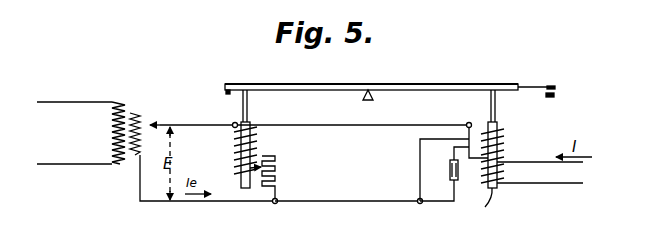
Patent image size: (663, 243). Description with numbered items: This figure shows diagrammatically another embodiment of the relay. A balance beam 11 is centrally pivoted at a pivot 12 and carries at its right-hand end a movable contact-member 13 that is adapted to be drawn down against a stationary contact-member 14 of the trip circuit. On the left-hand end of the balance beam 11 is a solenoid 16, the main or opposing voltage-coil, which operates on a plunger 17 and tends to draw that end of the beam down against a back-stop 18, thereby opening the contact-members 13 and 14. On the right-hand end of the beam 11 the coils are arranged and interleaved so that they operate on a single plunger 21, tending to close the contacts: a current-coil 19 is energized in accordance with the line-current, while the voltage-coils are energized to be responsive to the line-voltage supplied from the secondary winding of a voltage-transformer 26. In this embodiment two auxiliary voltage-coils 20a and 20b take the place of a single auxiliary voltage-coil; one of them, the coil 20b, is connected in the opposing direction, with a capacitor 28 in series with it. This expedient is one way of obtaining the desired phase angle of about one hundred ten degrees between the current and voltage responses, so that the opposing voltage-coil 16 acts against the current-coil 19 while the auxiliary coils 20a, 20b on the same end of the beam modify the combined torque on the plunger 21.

The balance beam 11 is at (338, 84).
The pivot 12 is at (366, 100).
The movable contact-member 13 is at (558, 86).
The stationary contact-member 14 is at (557, 96).
The solenoid 16 is at (256, 137).
The plunger 17 is at (243, 177).
The back-stop 18 is at (225, 92).
The current-coil 19 is at (500, 168).
The auxiliary voltage-coil 20a is at (498, 130).
The auxiliary voltage-coil 20b is at (500, 153).
The plunger 21 is at (481, 205).
The transformer 26 is at (125, 102).
The capacitor 28 is at (449, 168).